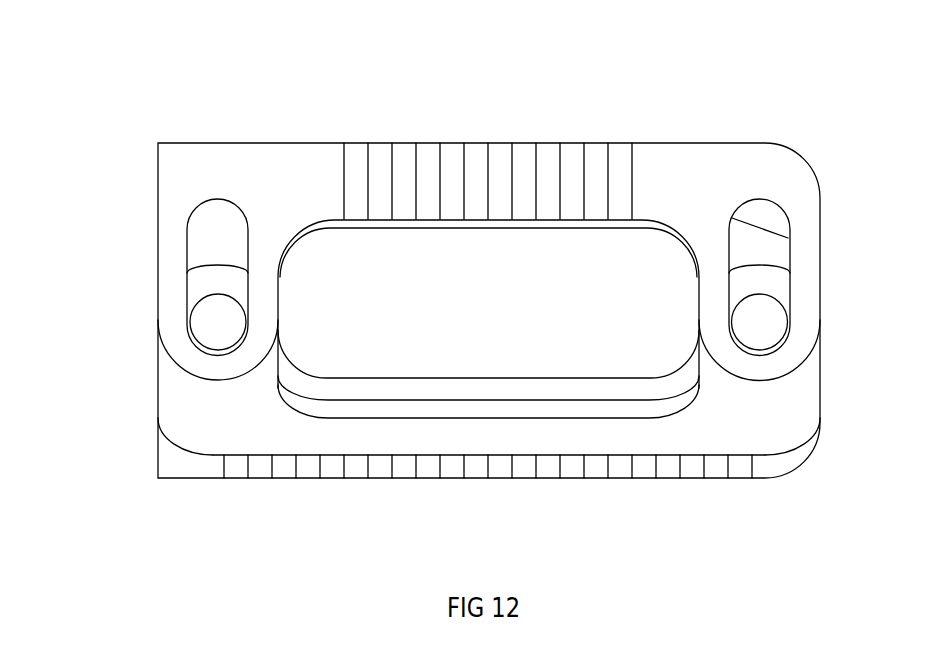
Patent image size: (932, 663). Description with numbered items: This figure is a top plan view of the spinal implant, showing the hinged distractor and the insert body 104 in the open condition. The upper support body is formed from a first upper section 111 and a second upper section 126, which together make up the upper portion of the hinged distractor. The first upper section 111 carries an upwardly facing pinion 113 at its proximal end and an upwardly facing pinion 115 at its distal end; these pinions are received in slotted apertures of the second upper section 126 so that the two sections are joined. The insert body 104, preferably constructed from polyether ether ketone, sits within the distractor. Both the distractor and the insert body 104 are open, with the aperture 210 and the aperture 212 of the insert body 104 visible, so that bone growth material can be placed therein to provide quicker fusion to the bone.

The second upper section 126 is at (553, 143).
The aperture 210 is at (587, 312).
The aperture 212 is at (387, 337).
The insert body 104 is at (770, 250).
The upwardly facing pinion 115 is at (787, 310).
The upwardly facing pinion 113 is at (218, 323).
The first upper section 111 is at (600, 455).